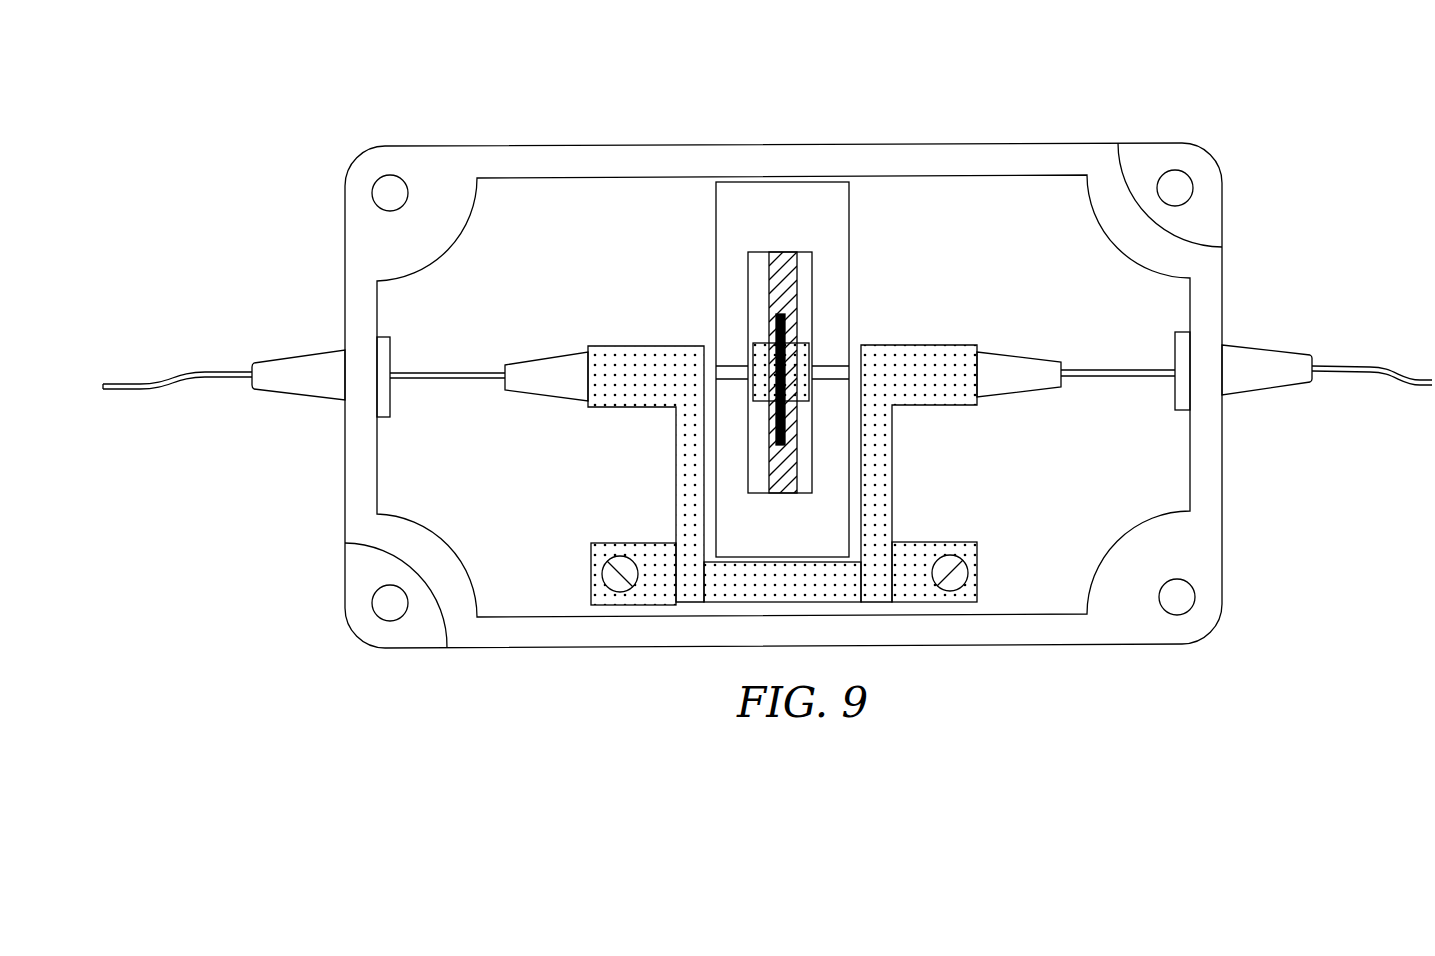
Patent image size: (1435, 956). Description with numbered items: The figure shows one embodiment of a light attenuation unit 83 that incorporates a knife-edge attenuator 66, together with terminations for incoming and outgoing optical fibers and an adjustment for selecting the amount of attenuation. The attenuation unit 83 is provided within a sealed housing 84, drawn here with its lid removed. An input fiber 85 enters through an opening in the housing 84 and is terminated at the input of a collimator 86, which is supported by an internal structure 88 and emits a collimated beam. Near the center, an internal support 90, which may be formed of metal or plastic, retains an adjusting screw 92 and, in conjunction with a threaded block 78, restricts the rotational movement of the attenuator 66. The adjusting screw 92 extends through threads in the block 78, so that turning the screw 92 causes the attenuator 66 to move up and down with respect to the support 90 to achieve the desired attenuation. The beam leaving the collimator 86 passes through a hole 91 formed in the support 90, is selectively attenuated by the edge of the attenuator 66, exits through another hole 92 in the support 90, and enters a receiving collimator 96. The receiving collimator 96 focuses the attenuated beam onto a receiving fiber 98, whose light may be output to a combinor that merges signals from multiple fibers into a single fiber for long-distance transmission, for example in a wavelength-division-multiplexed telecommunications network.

The light attenuation unit 83 is at (1163, 97).
The housing 84 is at (940, 143).
The input fiber 85 is at (172, 378).
The collimator 86 is at (540, 390).
The internal structure 88 is at (626, 346).
The internal support 90 is at (722, 228).
The adjusting screw 92 is at (778, 252).
The hole 91 is at (733, 380).
The threaded block 78 is at (757, 352).
The attenuator 66 is at (793, 325).
The receiving collimator 96 is at (1020, 388).
The receiving fiber 98 is at (1365, 366).